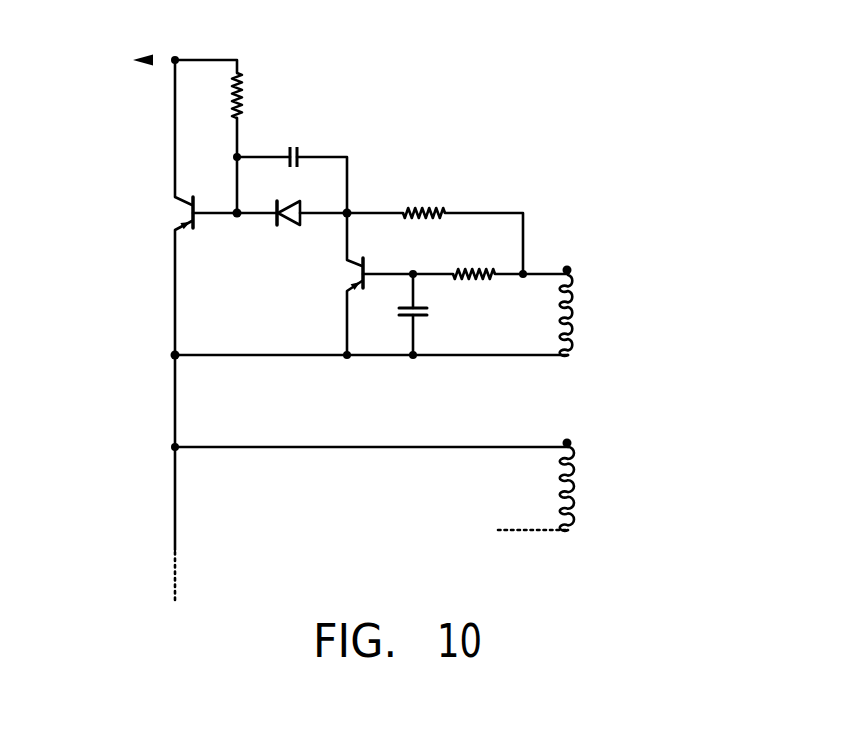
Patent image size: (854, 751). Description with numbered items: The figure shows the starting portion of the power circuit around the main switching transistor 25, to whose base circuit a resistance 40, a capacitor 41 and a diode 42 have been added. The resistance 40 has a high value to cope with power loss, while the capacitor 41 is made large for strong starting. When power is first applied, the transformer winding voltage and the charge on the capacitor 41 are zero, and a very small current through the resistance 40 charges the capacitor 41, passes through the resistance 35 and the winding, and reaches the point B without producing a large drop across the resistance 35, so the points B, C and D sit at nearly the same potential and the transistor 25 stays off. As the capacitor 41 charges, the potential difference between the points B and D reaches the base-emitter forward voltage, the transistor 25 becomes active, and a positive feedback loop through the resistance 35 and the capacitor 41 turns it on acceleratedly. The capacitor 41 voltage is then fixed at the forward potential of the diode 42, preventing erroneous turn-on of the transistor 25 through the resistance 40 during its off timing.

The main switching transistor 25 is at (182, 213).
The resistance 40 is at (240, 102).
The capacitor 41 is at (297, 147).
The diode 42 is at (277, 228).
The resistance 35 is at (427, 211).
The point C is at (357, 207).
The point D is at (232, 215).
The point B is at (173, 359).